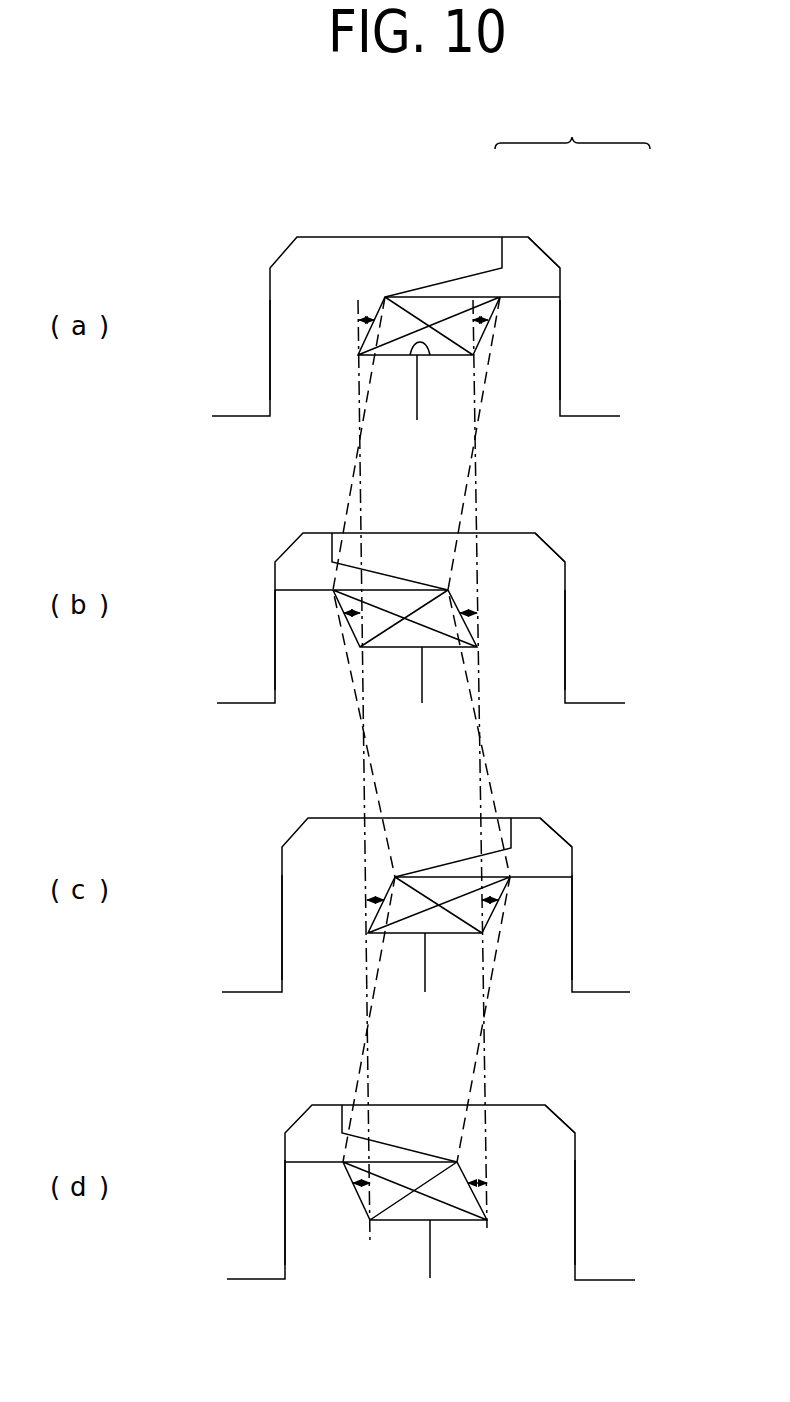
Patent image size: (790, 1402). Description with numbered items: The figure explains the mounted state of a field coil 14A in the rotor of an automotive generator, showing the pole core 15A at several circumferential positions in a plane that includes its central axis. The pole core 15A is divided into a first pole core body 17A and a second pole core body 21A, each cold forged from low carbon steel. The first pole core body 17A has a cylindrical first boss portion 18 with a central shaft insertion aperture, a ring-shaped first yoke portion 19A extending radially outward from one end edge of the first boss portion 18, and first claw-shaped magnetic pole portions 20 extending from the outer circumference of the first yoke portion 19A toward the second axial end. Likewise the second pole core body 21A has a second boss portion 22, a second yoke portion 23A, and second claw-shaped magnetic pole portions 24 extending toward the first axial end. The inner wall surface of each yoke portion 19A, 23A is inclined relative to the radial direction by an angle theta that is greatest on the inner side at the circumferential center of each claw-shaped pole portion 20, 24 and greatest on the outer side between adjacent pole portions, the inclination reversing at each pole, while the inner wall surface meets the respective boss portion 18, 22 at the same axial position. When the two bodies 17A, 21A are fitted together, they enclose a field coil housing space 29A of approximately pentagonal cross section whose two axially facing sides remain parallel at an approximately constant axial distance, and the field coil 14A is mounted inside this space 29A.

The field coil 14A is at (428, 307).
The pole core 15A is at (572, 120).
The first pole core body 17A is at (470, 236).
The second pole core body 21A is at (556, 247).
The first claw-shaped magnetic pole portions 20 is at (373, 263).
The second claw-shaped magnetic pole portions 24 is at (513, 267).
The first yoke portion 19A is at (328, 332).
The second yoke portion 23A is at (530, 327).
The first boss portion 18 is at (343, 395).
The second boss portion 22 is at (523, 387).
The field coil housing space 29A is at (410, 349).